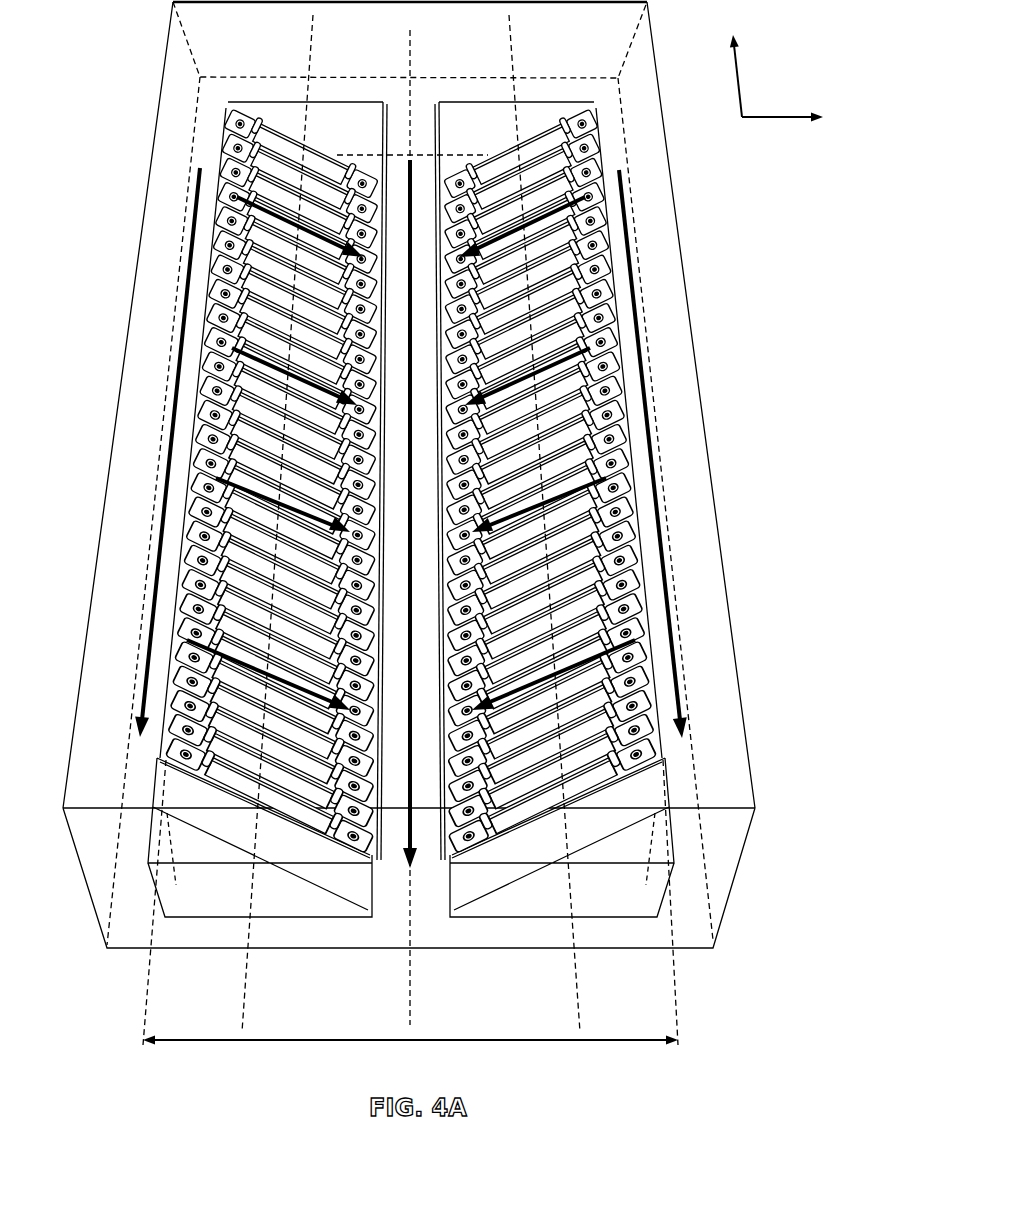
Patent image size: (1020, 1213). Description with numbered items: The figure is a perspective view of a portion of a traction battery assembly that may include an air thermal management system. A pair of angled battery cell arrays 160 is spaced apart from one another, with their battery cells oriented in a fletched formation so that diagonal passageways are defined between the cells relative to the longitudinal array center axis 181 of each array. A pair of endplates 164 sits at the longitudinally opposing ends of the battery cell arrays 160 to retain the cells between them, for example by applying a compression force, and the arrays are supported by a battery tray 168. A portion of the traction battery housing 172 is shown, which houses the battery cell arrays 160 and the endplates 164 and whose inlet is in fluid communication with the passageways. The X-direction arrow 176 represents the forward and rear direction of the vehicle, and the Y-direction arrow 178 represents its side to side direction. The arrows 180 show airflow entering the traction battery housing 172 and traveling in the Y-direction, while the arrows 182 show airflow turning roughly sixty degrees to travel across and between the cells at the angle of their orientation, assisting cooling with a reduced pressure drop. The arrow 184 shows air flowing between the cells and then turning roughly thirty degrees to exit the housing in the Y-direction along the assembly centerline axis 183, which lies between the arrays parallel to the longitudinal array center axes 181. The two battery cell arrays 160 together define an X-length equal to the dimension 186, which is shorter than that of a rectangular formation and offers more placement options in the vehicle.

The battery cell array 160 is at (198, 348).
The endplate 164 is at (283, 110).
The battery tray 168 is at (133, 850).
The traction battery housing 172 is at (678, 230).
The X-direction arrow 176 is at (782, 118).
The Y-direction arrow 178 is at (742, 75).
The arrows 180 is at (183, 385).
The longitudinal array center axis 181 is at (243, 1005).
The arrows 182 is at (222, 262).
The assembly centerline axis 183 is at (412, 1005).
The arrow 184 is at (422, 155).
The dimension 186 is at (398, 1040).